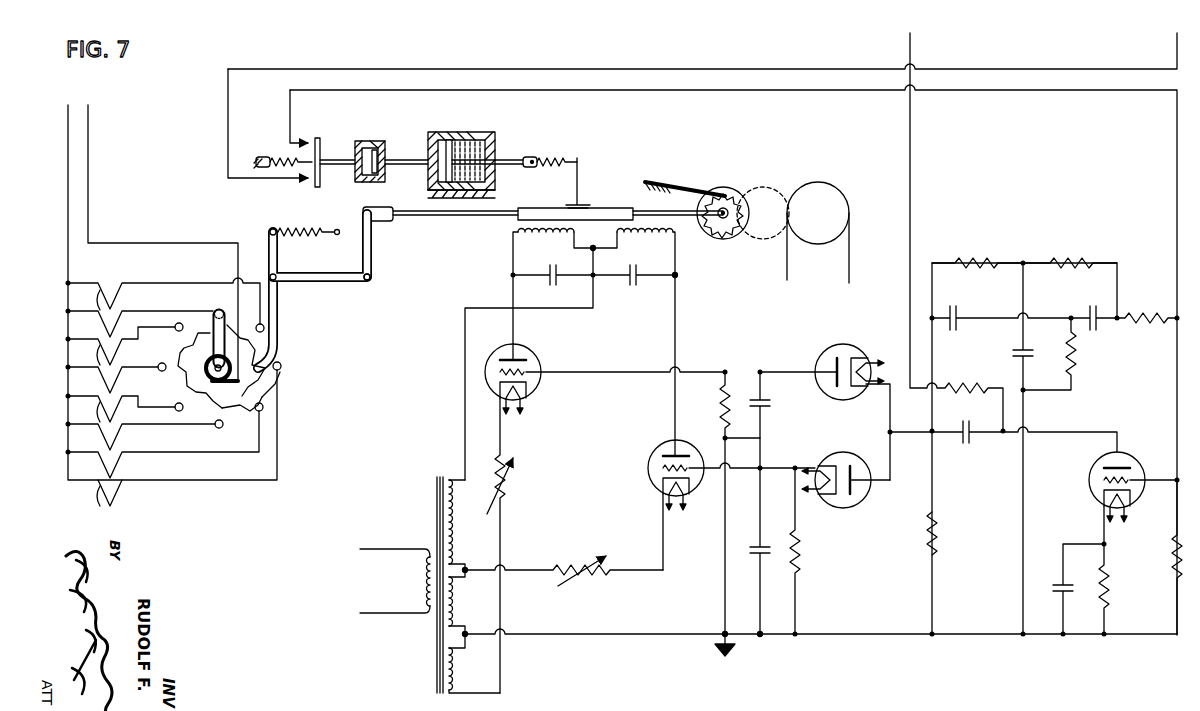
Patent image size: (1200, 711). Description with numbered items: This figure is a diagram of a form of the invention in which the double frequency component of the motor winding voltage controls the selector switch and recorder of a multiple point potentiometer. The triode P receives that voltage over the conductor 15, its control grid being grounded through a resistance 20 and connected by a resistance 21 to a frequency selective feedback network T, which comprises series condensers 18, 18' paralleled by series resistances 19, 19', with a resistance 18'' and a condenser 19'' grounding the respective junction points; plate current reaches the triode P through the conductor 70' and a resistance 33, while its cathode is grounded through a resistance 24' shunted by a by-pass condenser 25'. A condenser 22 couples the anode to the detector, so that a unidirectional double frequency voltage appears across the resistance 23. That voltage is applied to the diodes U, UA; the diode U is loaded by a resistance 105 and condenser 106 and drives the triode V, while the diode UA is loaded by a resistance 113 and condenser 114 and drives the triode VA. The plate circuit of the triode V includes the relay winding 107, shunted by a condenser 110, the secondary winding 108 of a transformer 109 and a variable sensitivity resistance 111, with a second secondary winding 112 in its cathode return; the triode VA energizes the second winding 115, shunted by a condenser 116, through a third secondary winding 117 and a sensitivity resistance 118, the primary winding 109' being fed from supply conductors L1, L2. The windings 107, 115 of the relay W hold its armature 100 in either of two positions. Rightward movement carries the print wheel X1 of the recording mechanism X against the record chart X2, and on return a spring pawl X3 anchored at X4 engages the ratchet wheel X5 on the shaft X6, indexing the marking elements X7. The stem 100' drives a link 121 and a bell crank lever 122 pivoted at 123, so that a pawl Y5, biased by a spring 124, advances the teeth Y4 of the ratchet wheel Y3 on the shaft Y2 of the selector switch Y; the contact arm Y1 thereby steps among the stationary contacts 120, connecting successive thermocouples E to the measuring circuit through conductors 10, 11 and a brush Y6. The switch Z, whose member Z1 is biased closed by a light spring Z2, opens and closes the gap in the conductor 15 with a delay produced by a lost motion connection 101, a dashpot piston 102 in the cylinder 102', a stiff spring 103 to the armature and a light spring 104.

The thermocouple lead conductor 10 is at (68, 171).
The thermocouple lead conductor 11 is at (88, 171).
The conductor 15 is at (1177, 45).
The conductor 70' is at (934, 232).
The thermocouple E is at (98, 320).
The selector switch mechanism Y is at (328, 352).
The contact arm Y1 is at (217, 304).
The intermittently rotated shaft Y2 is at (206, 365).
The ratchet wheel Y3 is at (187, 376).
The teeth Y4 is at (238, 420).
The pawl Y5 is at (278, 326).
The brush Y6 is at (180, 372).
The stationary switch contacts 120 is at (262, 404).
The switch mechanism Z is at (282, 192).
The movable switch member Z1 is at (320, 188).
The light spring Z2 is at (282, 159).
The lost motion connection 101 is at (374, 141).
The dashpot piston 102 is at (419, 172).
The dashpot cylinder 102' is at (470, 140).
The light spring 104 is at (475, 132).
The stiff spring 103 is at (544, 160).
The armature 100 is at (618, 201).
The stem portion 100' is at (455, 230).
The link 121 is at (383, 224).
The bell crank lever 122 is at (336, 285).
The pivot 123 is at (372, 274).
The spring 124 is at (308, 235).
The intermittently operating relay W is at (476, 256).
The recording mechanism X is at (749, 286).
The print wheel X1 is at (742, 238).
The record chart X2 is at (787, 268).
The spring pawl X3 is at (684, 186).
The anchor X4 is at (646, 187).
The ratchet wheel X5 is at (721, 240).
The shaft X6 is at (712, 234).
The print wheel marking element X7 is at (730, 186).
The relay winding 115 is at (561, 245).
The relay winding 107 is at (656, 245).
The by-pass condenser 116 is at (552, 288).
The condenser 110 is at (634, 286).
The triode valve VA is at (531, 350).
The triode valve V is at (662, 439).
The diode valve UA is at (842, 349).
The diode valve U is at (845, 457).
The triode P is at (1096, 466).
The load resistance 113 is at (722, 402).
The by-pass condenser 114 is at (763, 403).
The sensitivity control variable resistance 118 is at (504, 491).
The by-pass condenser 106 is at (755, 548).
The resistance 105 is at (804, 553).
The transformer 109 is at (402, 584).
The primary winding 109' is at (394, 581).
The secondary winding 108 is at (453, 521).
The second secondary winding 112 is at (455, 597).
The third secondary winding 117 is at (455, 660).
The variable sensitivity resistance 111 is at (586, 556).
The supply conductor L1 is at (372, 537).
The supply conductor L2 is at (372, 620).
The resistance-capacity network T is at (1108, 366).
The resistance 19 is at (977, 251).
The resistance 19' is at (1070, 251).
The condenser 19'' is at (999, 448).
The condenser 18 is at (1001, 306).
The condenser 18' is at (1090, 306).
The resistance 18'' is at (1075, 354).
The resistance 21 is at (1154, 315).
The resistance 33 is at (969, 384).
The condenser 22 is at (969, 442).
The resistance 23 is at (939, 533).
The resistance 20 is at (1172, 556).
The resistance 24' is at (1126, 589).
The by-pass condenser 25' is at (1064, 589).